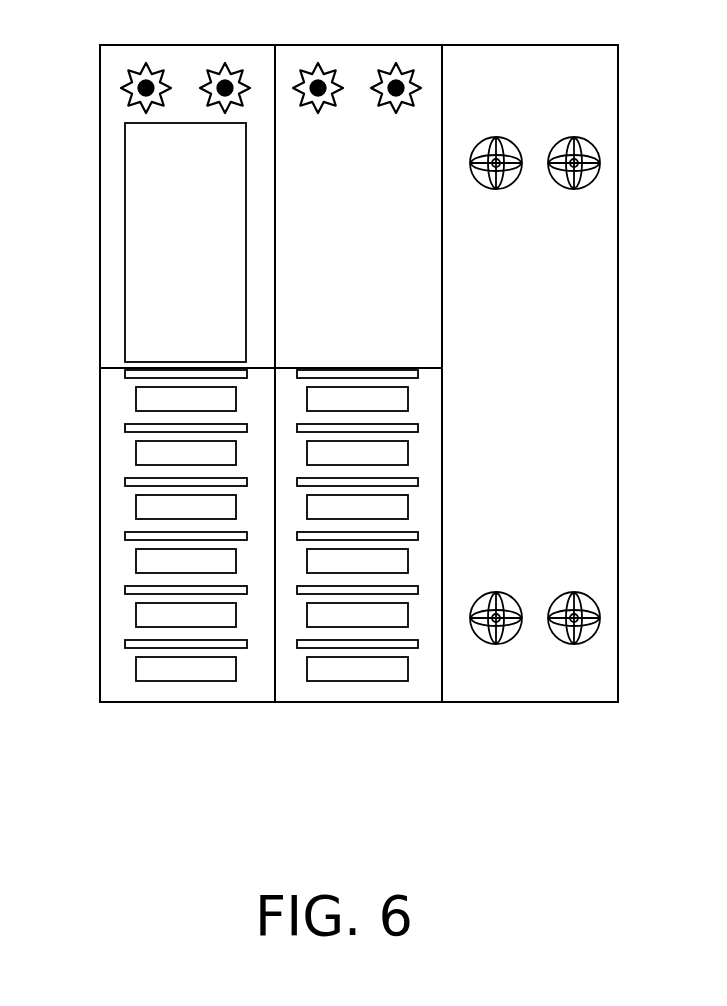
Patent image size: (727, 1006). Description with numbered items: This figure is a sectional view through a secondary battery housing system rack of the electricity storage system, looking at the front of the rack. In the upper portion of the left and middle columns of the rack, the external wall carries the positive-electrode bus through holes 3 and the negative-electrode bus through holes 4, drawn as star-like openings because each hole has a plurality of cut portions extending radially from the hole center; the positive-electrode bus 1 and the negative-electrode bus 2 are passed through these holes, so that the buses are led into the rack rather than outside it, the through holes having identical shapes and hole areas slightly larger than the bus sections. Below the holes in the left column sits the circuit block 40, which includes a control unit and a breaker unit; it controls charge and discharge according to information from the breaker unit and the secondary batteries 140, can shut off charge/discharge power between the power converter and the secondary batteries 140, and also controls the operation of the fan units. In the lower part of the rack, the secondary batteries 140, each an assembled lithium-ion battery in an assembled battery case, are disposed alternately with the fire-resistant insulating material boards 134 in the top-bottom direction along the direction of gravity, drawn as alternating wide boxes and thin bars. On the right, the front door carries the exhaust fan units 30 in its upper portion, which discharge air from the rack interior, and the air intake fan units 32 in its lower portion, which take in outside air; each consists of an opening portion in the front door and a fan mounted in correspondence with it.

The positive-electrode bus 1 is at (264, 57).
The negative-electrode bus 2 is at (264, 57).
The positive-electrode bus through hole 3 is at (150, 78).
The negative-electrode bus through hole 4 is at (229, 78).
The exhaust fan unit 30 is at (496, 190).
The air intake fan unit 32 is at (496, 592).
The circuit block 40 is at (125, 265).
The fire-resistant insulating material board 134 is at (131, 646).
The secondary battery 140 is at (202, 674).